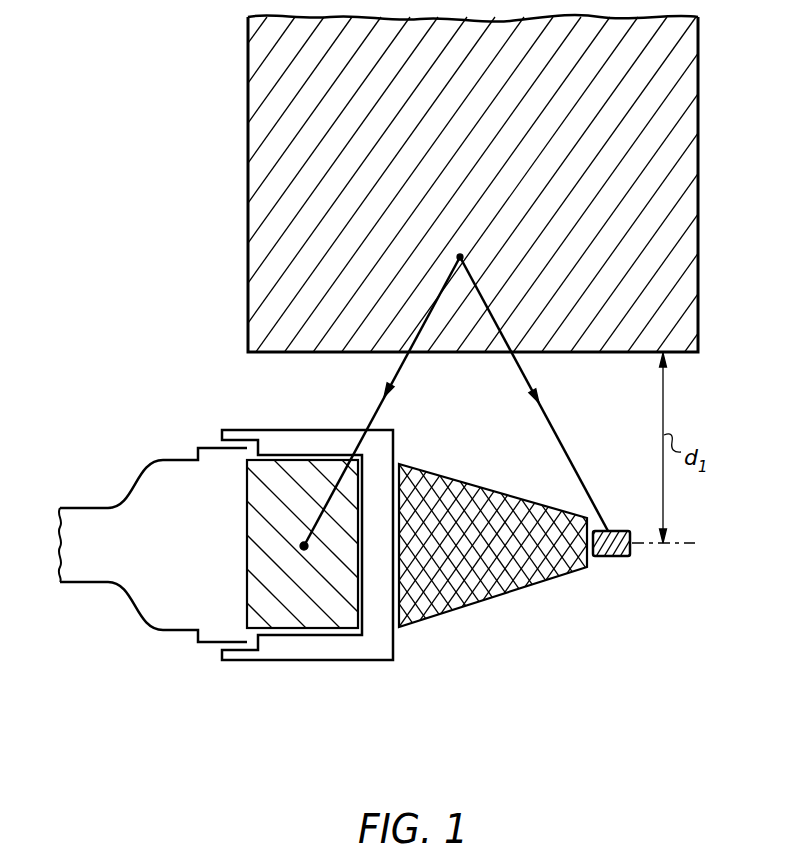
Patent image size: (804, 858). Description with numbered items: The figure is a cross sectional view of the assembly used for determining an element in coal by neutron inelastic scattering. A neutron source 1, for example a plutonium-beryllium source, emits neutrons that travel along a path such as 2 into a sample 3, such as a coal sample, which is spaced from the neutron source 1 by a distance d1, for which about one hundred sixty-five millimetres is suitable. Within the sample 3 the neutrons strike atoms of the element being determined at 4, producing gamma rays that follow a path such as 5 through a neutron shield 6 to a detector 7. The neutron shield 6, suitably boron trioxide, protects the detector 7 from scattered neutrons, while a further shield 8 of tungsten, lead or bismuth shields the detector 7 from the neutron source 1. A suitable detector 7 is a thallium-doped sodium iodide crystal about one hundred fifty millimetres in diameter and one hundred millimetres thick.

The neutron source 1 is at (633, 549).
The neutron path 2 is at (552, 414).
The sample 3 is at (660, 209).
The interaction point 4 is at (448, 247).
The gamma ray path 5 is at (402, 372).
The neutron shield 6 is at (345, 648).
The detector 7 is at (280, 594).
The further shield 8 is at (458, 606).